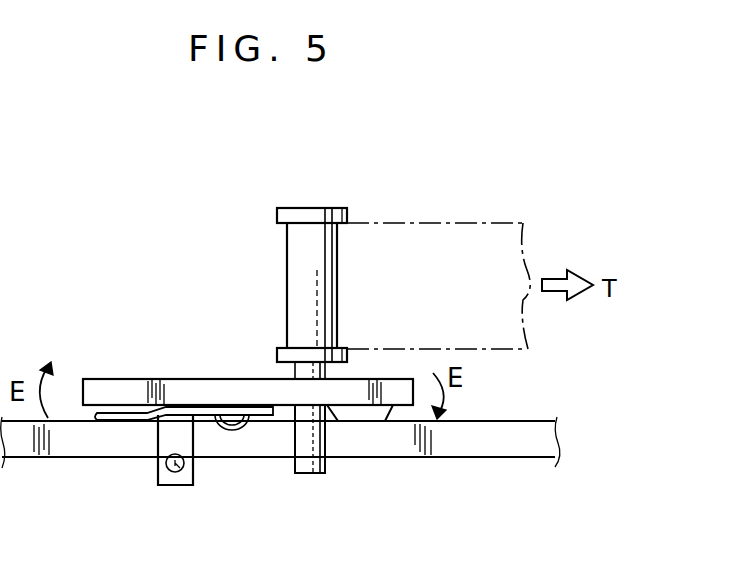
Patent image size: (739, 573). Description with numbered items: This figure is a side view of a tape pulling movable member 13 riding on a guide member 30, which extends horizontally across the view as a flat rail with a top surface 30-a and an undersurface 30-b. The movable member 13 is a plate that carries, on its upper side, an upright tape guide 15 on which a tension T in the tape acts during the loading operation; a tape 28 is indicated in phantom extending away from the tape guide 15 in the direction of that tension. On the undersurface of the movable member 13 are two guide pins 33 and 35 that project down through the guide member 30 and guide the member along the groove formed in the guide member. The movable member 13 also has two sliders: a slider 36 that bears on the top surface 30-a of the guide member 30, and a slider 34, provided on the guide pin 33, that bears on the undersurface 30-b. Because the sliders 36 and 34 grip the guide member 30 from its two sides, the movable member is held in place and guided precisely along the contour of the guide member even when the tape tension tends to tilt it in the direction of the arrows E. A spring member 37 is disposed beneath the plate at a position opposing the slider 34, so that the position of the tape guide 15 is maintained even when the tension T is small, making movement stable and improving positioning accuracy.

The tape pulling movable member 13 is at (125, 380).
The tape guide 15 is at (330, 207).
The carriage (phantom) 28 is at (437, 222).
The guide member 30 is at (541, 432).
The top surface 30-a is at (477, 421).
The undersurface 30-b is at (467, 457).
The guide pin 33 is at (163, 475).
The slider 34 is at (192, 483).
The guide pin 35 is at (305, 464).
The slider 36 is at (363, 421).
The spring member 37 is at (98, 421).